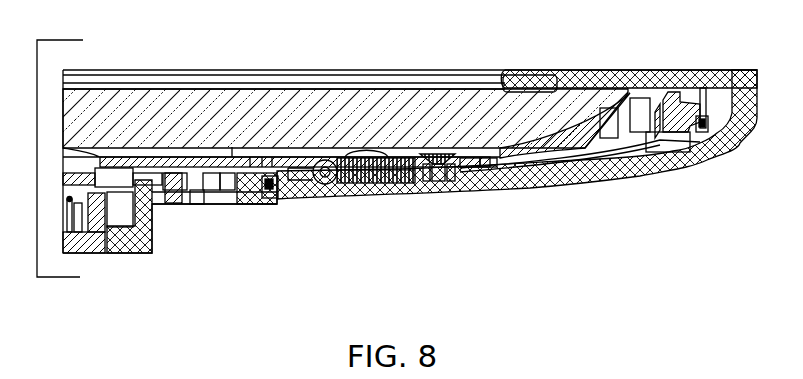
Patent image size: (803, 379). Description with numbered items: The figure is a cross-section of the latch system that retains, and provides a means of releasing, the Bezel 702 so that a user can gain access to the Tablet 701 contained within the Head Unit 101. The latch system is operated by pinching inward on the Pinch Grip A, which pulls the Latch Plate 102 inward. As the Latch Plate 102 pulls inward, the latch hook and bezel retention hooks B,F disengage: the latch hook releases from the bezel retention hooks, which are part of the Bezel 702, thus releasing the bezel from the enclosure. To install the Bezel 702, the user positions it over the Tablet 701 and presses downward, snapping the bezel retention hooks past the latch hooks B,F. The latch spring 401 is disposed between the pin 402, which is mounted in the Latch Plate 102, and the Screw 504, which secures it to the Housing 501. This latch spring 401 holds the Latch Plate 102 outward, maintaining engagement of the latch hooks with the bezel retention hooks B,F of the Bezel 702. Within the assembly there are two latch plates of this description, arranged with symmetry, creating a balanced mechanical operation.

The head unit 101 is at (53, 275).
The latch plate 102 is at (272, 180).
The latch spring 401 is at (373, 176).
The pin 402 is at (327, 184).
The housing 501 is at (492, 192).
The screw 504 is at (442, 178).
The tablet 701 is at (568, 118).
The bezel 702 is at (633, 71).
The pinch grip A is at (197, 198).
The latch hook and bezel retention hooks B,F is at (702, 120).